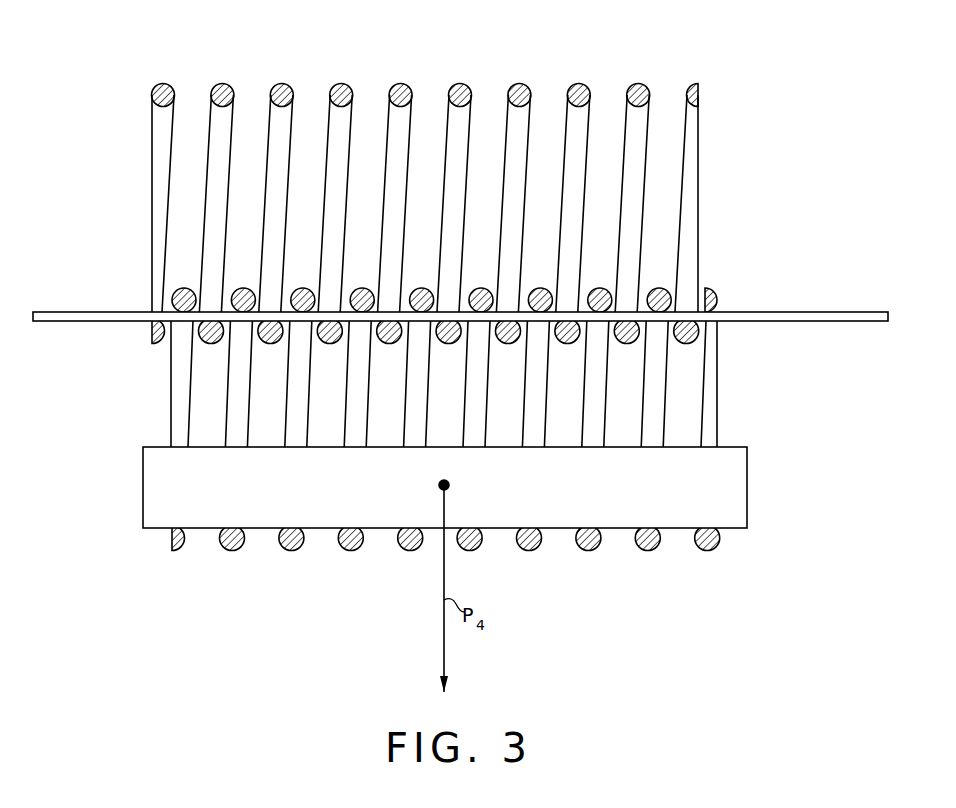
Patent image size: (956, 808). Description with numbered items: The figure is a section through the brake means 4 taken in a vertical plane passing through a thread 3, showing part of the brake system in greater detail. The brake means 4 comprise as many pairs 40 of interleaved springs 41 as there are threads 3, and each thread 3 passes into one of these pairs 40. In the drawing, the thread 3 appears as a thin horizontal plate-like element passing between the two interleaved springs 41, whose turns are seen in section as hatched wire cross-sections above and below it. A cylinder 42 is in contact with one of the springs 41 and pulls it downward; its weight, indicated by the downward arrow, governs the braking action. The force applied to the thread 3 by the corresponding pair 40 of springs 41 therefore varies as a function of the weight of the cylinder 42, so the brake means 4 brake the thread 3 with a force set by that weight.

The thread 3 is at (822, 312).
The brake means 4 is at (431, 295).
The pair of interleaved springs 40 is at (156, 86).
The spring 41 is at (152, 156).
The cylinder 42 is at (747, 478).